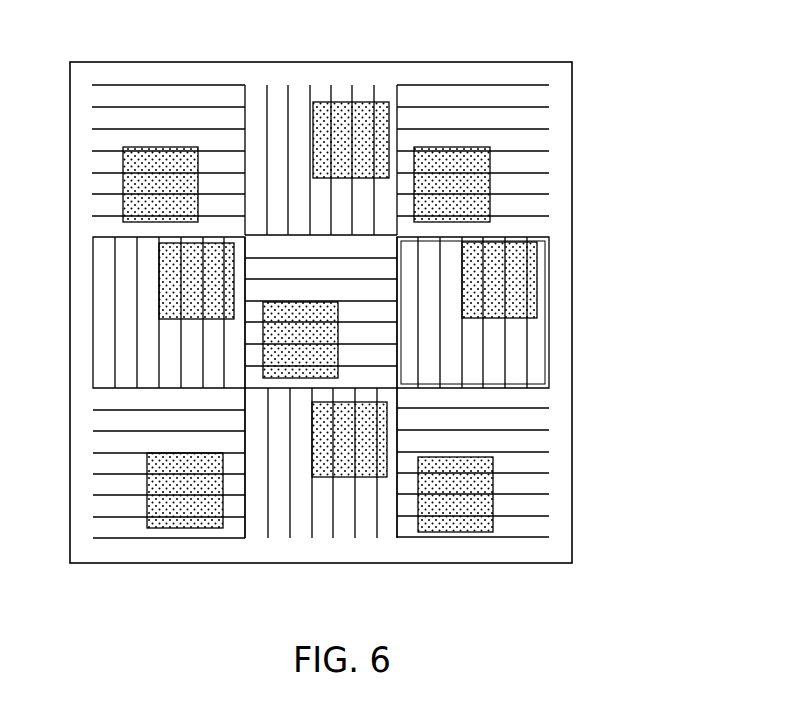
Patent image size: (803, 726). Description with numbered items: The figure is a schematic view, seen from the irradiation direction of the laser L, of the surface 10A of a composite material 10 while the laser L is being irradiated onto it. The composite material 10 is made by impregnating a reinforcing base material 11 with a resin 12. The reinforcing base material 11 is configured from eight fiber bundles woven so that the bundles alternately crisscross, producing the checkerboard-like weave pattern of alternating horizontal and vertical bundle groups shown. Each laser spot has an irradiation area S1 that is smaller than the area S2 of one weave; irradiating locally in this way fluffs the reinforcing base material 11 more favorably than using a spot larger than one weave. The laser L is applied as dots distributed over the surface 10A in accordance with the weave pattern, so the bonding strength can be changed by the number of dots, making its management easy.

The composite material 10 is at (339, 74).
The reinforcing base material 11 is at (538, 105).
The resin 12 is at (558, 418).
The surface of the composite material 10A is at (562, 225).
The irradiation area of the laser S1 is at (537, 290).
The area of one weave S2 is at (545, 364).
The laser L is at (485, 181).